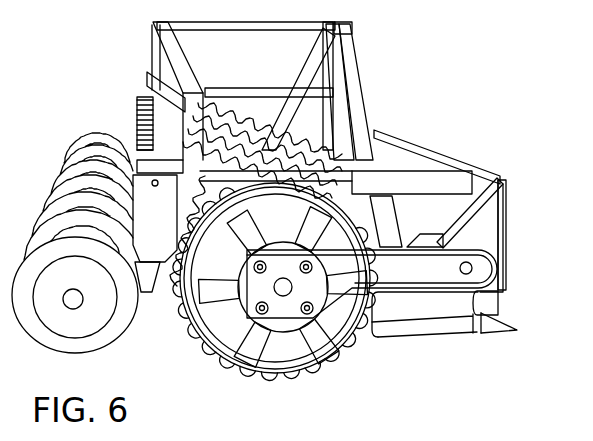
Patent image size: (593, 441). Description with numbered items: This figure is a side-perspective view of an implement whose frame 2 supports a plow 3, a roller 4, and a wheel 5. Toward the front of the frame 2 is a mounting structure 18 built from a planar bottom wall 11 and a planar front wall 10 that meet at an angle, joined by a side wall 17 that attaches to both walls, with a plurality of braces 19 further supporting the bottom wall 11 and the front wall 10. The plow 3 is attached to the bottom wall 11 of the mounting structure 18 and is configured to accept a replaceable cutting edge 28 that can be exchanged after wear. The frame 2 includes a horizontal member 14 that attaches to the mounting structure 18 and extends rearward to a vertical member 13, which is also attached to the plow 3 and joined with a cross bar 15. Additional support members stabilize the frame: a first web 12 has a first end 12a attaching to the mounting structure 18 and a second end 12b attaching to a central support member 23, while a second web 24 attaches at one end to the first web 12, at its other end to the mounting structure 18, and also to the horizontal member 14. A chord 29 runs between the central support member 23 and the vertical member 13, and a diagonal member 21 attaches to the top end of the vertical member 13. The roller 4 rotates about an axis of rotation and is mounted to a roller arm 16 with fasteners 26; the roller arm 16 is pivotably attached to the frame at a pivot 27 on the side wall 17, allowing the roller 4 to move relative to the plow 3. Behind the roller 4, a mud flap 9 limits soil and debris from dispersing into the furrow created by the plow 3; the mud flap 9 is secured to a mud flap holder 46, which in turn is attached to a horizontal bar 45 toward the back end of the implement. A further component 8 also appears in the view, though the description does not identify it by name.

The frame 2 is at (500, 36).
The plow 3 is at (462, 337).
The roller 4 is at (341, 384).
The wheel 5 is at (24, 318).
The lower bracket 8 is at (135, 262).
The mud flap 9 is at (152, 217).
The front wall 10 is at (507, 265).
The bottom wall 11 is at (482, 300).
The first web 12 is at (362, 108).
The first end 12a is at (385, 217).
The second end 12b is at (344, 31).
The vertical member 13 is at (157, 24).
The horizontal member 14 is at (268, 90).
The cross bar 15 is at (150, 82).
The roller arm 16 is at (381, 277).
The side wall 17 is at (500, 233).
The mounting structure 18 is at (517, 192).
The braces 19 is at (424, 161).
The diagonal member 21 is at (181, 60).
The central support member 23 is at (340, 24).
The second web 24 is at (342, 90).
The fasteners 26 is at (313, 267).
The pivot 27 is at (460, 268).
The replaceable cutting edge 28 is at (510, 334).
The chord 29 is at (228, 15).
The horizontal bar 45 is at (192, 168).
The mud flap holder 46 is at (130, 143).